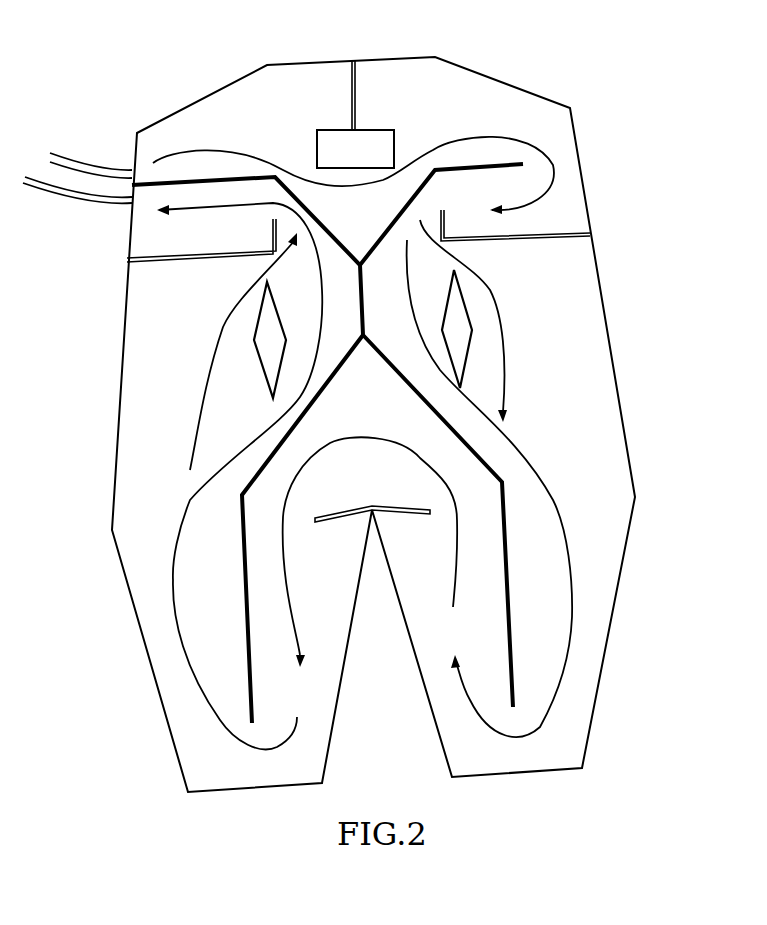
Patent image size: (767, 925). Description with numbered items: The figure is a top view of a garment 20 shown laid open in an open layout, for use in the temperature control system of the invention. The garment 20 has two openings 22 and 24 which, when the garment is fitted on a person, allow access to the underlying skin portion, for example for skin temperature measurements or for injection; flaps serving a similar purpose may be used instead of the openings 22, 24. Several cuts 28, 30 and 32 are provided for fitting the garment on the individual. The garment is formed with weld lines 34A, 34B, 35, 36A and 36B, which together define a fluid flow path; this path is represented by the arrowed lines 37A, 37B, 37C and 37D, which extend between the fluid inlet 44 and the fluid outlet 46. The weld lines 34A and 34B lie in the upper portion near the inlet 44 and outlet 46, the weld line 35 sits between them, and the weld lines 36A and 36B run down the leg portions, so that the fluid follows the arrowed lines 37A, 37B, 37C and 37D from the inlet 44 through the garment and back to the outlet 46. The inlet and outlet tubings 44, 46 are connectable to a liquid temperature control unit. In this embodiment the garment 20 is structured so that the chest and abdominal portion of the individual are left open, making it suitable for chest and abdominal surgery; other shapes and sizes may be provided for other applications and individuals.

The garment 20 is at (652, 383).
The opening 22 is at (460, 338).
The opening 24 is at (267, 327).
The cut 28 is at (553, 233).
The cut 30 is at (403, 515).
The cut 32 is at (357, 93).
The weld line 34A is at (193, 183).
The weld line 34B is at (433, 180).
The weld line 35 is at (363, 301).
The weld line 36A is at (513, 597).
The weld line 36B is at (253, 473).
The arrowed line 37A is at (430, 153).
The arrowed line 37B is at (560, 520).
The arrowed line 37C is at (447, 470).
The arrowed line 37D is at (173, 608).
The fluid inlet 44 is at (80, 163).
The fluid outlet 46 is at (88, 205).